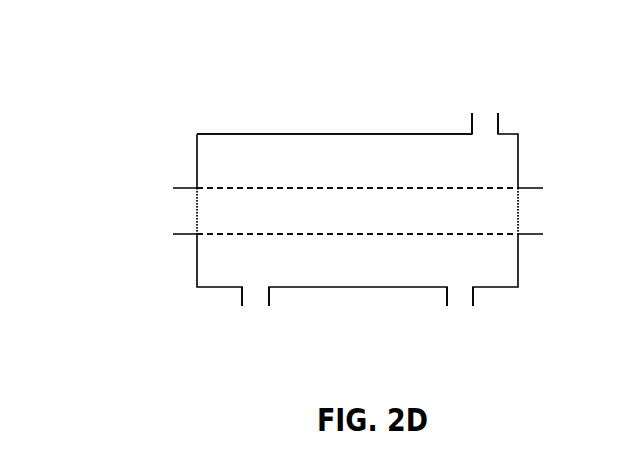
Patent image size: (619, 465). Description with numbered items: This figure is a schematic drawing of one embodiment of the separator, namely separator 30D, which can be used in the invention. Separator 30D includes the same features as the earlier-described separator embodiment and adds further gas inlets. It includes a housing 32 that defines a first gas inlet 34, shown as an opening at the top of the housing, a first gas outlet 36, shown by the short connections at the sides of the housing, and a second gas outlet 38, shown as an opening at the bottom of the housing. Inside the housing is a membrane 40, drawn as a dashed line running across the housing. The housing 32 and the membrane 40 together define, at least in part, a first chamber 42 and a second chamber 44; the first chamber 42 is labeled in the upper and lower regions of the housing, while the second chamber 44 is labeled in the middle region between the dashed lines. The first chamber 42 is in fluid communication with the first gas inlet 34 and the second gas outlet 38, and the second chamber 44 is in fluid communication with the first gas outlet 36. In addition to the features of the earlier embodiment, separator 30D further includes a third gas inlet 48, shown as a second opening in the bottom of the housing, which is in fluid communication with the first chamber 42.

The separator 30D is at (153, 114).
The housing 32 is at (268, 134).
The first gas inlet 34 is at (483, 122).
The first gas outlet 36 is at (182, 207).
The second gas outlet 38 is at (463, 305).
The membrane 40 is at (355, 233).
The first chamber 42 is at (355, 173).
The second chamber 44 is at (378, 220).
The third gas inlet 48 is at (257, 303).